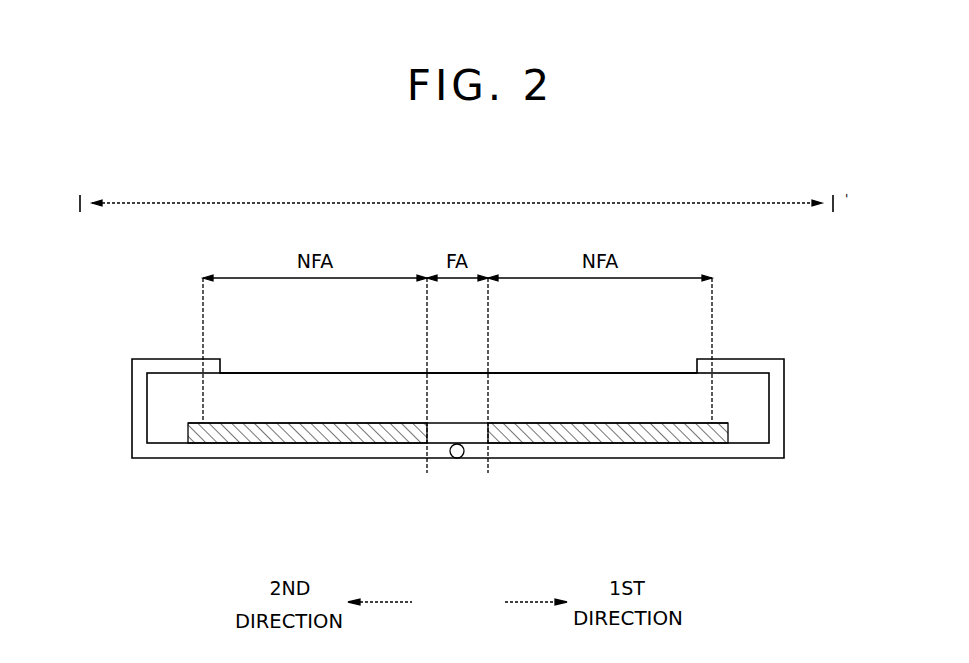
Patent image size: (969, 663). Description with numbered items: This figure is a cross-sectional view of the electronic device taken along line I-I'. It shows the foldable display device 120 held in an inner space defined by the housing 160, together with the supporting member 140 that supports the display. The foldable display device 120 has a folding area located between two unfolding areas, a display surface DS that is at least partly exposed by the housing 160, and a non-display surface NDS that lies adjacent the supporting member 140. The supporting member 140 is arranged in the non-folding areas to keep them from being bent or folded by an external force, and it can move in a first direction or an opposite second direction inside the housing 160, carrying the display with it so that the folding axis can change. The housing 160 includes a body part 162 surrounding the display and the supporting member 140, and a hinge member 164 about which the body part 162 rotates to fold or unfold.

The foldable display device 120 is at (660, 402).
The supporting member 140 is at (598, 444).
The housing 160 is at (538, 525).
The body part 162 is at (522, 450).
The hinge member 164 is at (457, 459).
The display surface DS is at (253, 372).
The non-display surface NDS is at (254, 424).